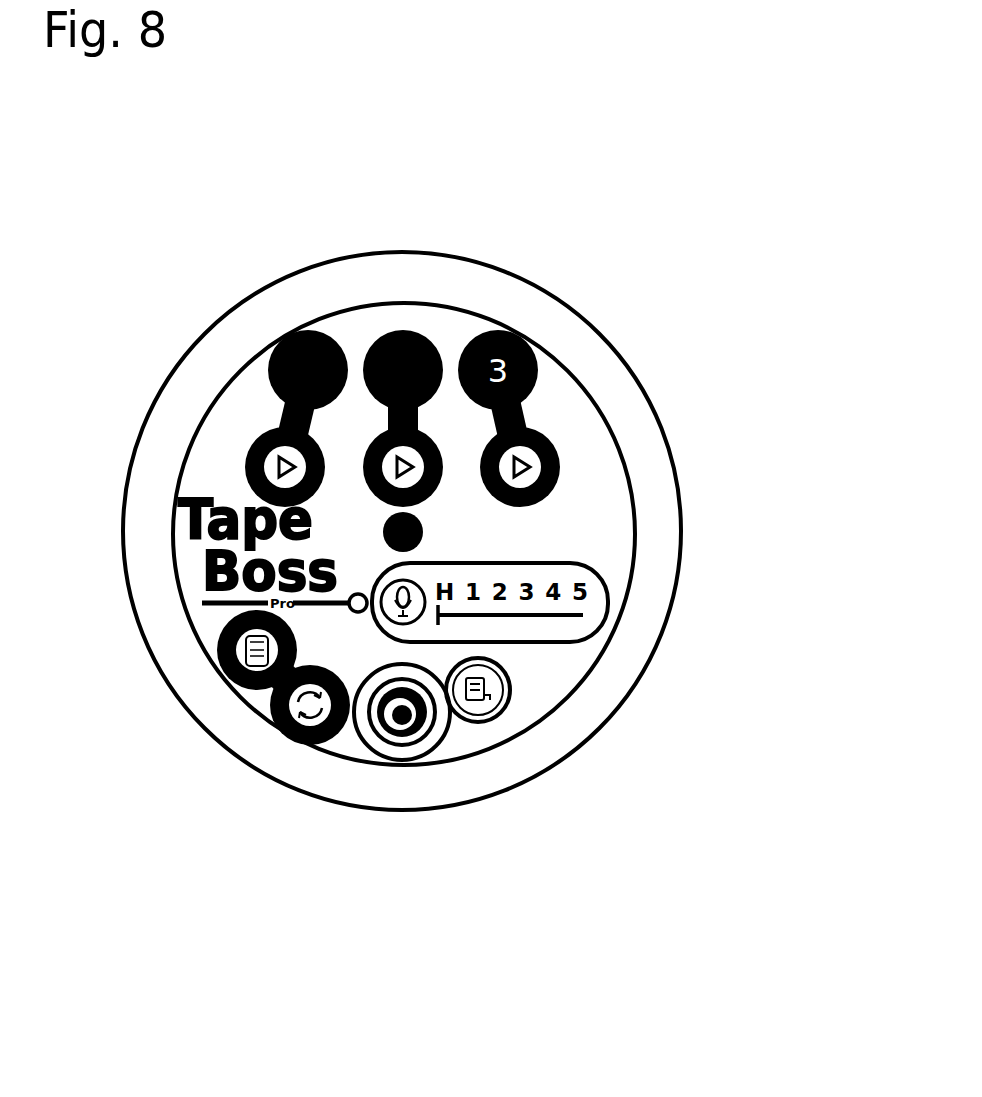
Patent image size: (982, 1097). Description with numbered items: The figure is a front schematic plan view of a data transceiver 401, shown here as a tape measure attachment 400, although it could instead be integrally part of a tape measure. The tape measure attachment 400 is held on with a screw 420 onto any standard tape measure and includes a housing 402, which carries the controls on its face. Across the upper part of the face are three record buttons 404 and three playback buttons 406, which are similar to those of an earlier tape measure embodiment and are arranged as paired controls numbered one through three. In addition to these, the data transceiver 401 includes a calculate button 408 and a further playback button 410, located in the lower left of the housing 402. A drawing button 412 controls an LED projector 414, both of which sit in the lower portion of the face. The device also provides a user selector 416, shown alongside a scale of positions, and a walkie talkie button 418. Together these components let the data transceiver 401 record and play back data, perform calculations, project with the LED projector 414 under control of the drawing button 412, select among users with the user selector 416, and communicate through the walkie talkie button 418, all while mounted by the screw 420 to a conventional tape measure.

The tape measure attachment 400 is at (808, 212).
The data transceiver 401 is at (692, 117).
The housing 402 is at (390, 333).
The record buttons 404 is at (287, 335).
The playback buttons 406 is at (252, 445).
The calculate button 408 is at (227, 688).
The playback button 410 is at (297, 735).
The drawing button 412 is at (487, 700).
The LED projector 414 is at (405, 722).
The user selector 416 is at (438, 613).
The walkie talkie button 418 is at (422, 612).
The screw 420 is at (425, 528).